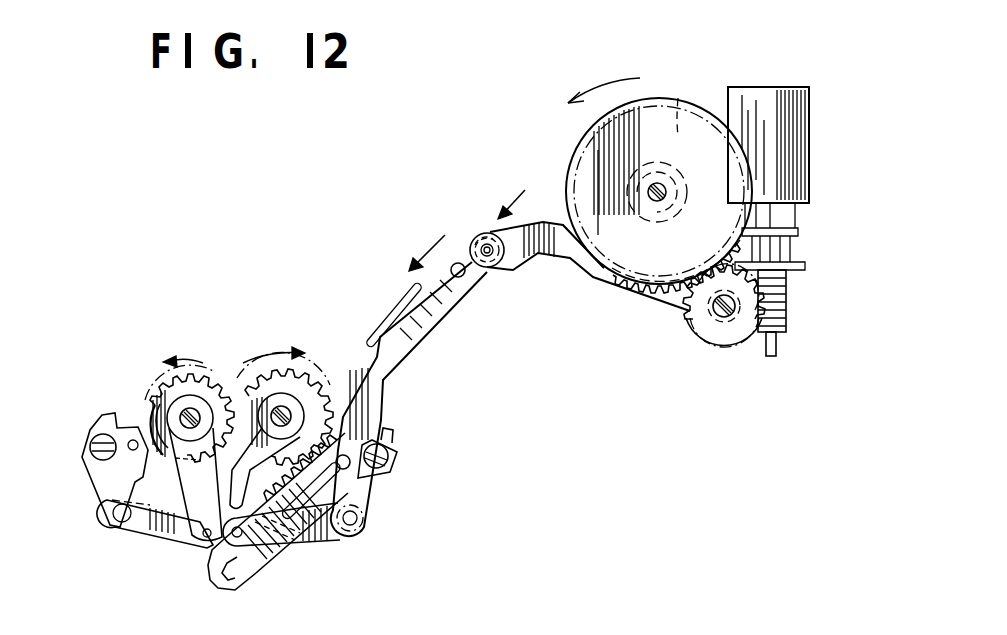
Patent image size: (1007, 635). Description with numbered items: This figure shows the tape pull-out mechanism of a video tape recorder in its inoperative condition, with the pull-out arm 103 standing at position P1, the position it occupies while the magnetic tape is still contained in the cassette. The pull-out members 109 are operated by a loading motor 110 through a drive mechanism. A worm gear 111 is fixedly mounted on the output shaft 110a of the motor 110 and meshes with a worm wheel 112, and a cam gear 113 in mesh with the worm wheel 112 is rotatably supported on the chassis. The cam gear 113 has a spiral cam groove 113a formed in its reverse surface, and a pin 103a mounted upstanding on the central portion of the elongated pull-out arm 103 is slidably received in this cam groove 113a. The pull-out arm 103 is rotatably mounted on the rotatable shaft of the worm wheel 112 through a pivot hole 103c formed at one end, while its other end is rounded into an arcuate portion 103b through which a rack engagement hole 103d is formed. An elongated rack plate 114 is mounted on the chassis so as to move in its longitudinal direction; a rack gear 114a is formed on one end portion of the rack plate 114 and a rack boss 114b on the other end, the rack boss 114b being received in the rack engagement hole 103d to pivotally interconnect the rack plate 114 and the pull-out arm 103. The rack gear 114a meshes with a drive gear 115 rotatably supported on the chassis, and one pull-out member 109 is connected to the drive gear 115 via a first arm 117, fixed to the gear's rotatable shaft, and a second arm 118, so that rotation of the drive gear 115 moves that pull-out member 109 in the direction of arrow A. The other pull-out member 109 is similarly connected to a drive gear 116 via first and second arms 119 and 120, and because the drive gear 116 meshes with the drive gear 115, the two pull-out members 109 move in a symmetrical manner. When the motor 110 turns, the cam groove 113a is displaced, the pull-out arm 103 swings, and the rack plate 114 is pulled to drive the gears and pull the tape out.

The pull-out arm 103 is at (548, 262).
The pin 103a is at (622, 278).
The arcuate portion 103b is at (470, 237).
The pivot hole 103c is at (718, 342).
The rack engagement hole 103d is at (486, 232).
The pull-out member 109 is at (90, 428).
The loading motor 110 is at (810, 110).
The output shaft 110a is at (778, 345).
The worm gear 111 is at (841, 317).
The worm wheel 112 is at (743, 340).
The cam gear 113 is at (650, 97).
The spiral cam groove 113a is at (678, 98).
The rack plate 114 is at (425, 355).
The rack gear 114a is at (207, 550).
The rack boss 114b is at (487, 267).
The drive gear 115 is at (315, 365).
The drive gear 116 is at (158, 378).
The first arm 117 is at (270, 548).
The second arm 118 is at (328, 540).
The first arm 119 is at (137, 513).
The second arm 120 is at (168, 532).
The position of the pull-out arm P1 is at (572, 262).
The arrow A is at (62, 462).